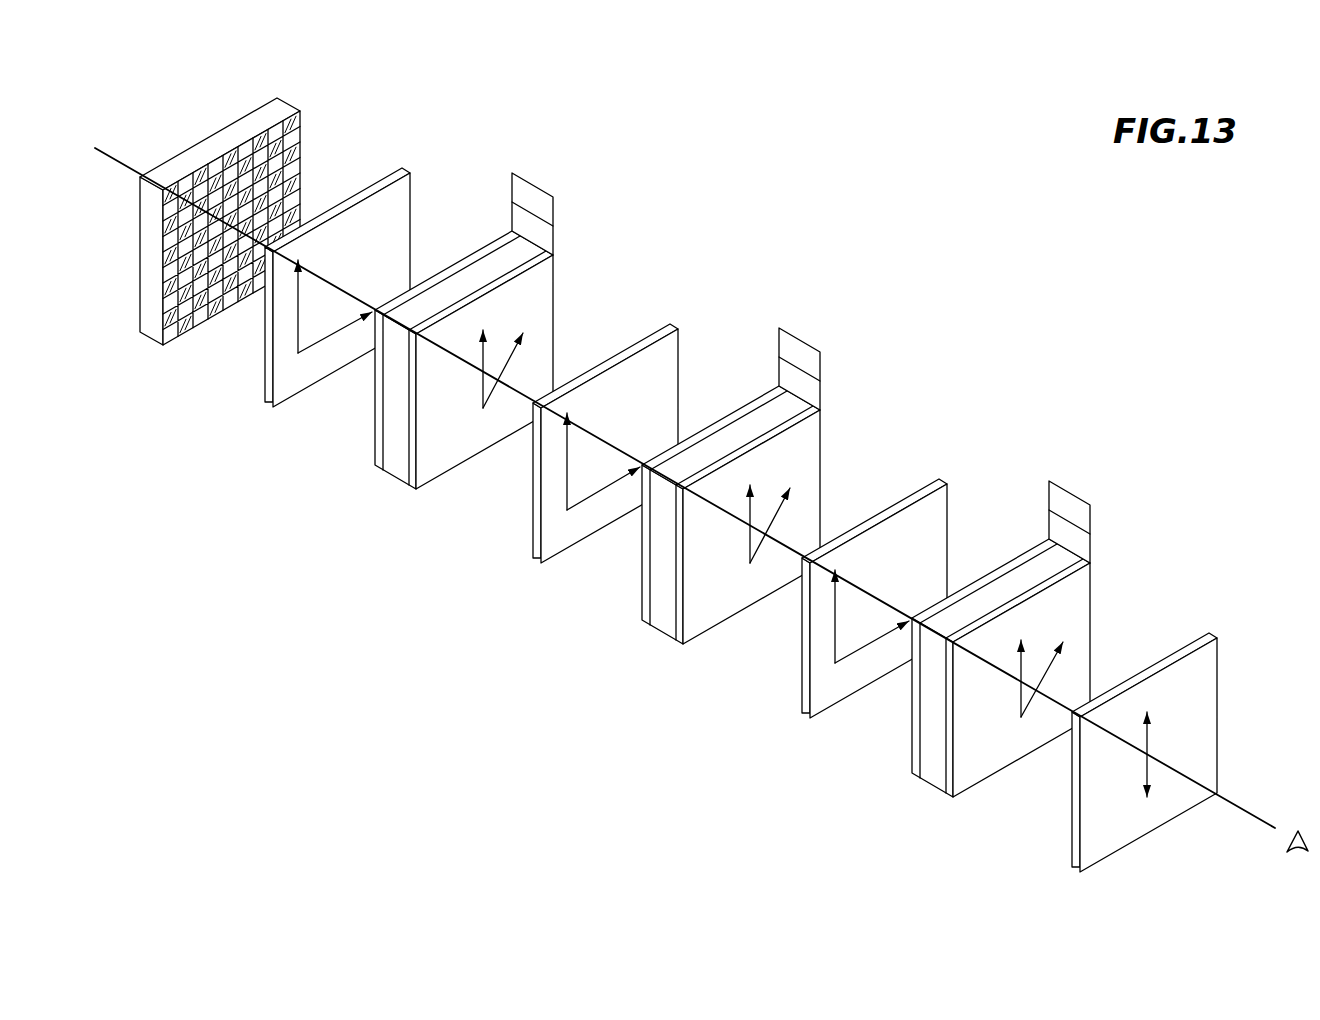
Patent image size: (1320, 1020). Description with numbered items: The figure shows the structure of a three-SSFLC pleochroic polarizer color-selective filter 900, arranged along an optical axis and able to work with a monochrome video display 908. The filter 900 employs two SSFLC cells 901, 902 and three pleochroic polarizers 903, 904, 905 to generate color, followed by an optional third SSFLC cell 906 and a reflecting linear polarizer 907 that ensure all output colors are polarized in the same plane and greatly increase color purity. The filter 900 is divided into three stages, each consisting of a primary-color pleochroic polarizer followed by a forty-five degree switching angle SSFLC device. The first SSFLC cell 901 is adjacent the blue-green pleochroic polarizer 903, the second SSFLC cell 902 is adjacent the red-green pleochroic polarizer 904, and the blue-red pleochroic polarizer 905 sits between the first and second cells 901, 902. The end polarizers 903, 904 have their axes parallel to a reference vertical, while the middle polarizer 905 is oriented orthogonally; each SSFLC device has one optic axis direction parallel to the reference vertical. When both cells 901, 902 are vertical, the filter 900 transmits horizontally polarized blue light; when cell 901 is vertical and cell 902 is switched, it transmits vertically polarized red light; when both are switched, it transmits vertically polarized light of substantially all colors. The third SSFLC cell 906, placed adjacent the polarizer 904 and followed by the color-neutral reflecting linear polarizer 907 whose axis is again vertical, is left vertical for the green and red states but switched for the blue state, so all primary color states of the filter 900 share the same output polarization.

The three-SSFLC pleochroic polarizer color-selective filter 900 is at (698, 247).
The first SSFLC cell 901 is at (467, 255).
The second SSFLC cell 902 is at (790, 340).
The blue-green pleochroic polarizer 903 is at (380, 173).
The red-green pleochroic polarizer 904 is at (808, 712).
The blue-red pleochroic polarizer 905 is at (537, 560).
The third SSFLC cell 906 is at (915, 782).
The reflecting linear polarizer 907 is at (1075, 870).
The monochrome video display 908 is at (283, 106).